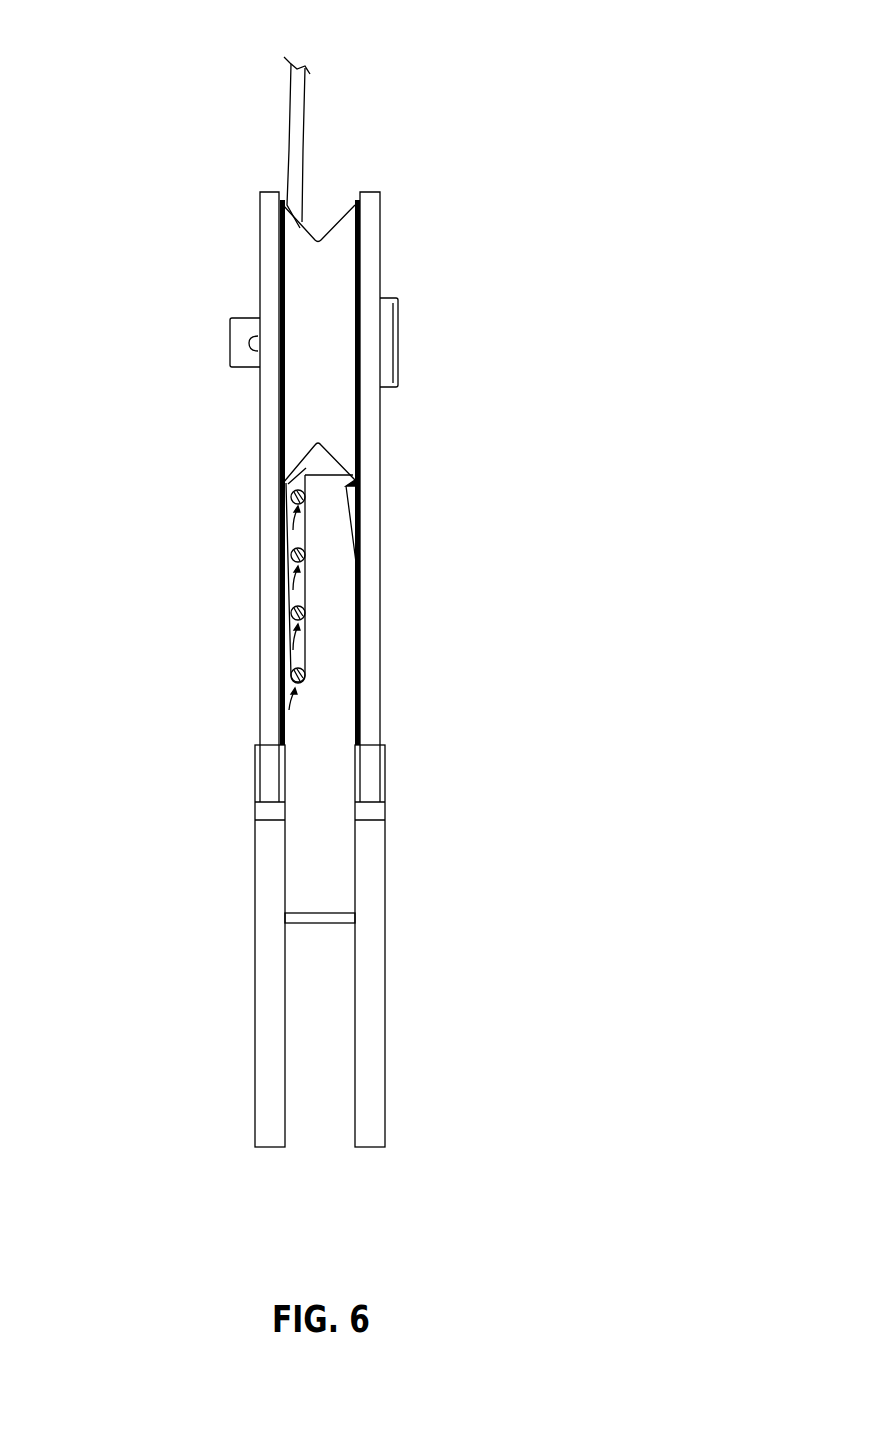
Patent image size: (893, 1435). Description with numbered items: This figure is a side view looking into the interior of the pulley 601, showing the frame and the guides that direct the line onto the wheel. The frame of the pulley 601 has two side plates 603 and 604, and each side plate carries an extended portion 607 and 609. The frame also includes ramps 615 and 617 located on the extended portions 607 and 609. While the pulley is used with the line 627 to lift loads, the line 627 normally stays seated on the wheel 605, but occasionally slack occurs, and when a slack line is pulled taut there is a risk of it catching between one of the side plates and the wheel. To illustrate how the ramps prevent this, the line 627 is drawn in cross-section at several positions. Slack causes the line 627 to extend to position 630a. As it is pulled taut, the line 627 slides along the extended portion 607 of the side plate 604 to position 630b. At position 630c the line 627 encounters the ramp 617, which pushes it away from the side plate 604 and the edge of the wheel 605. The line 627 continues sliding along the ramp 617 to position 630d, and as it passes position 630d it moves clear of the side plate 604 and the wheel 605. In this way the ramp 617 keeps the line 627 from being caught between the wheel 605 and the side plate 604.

The pulley 601 is at (347, 124).
The side plate 603 is at (370, 240).
The side plate 604 is at (268, 412).
The wheel 605 is at (300, 277).
The extended portion 607 is at (268, 505).
The extended portion 609 is at (368, 553).
The ramp 615 is at (358, 485).
The ramp 617 is at (280, 485).
The line 627 is at (295, 130).
The position 630a is at (292, 697).
The position 630b is at (292, 648).
The position 630c is at (292, 588).
The position 630d is at (290, 527).